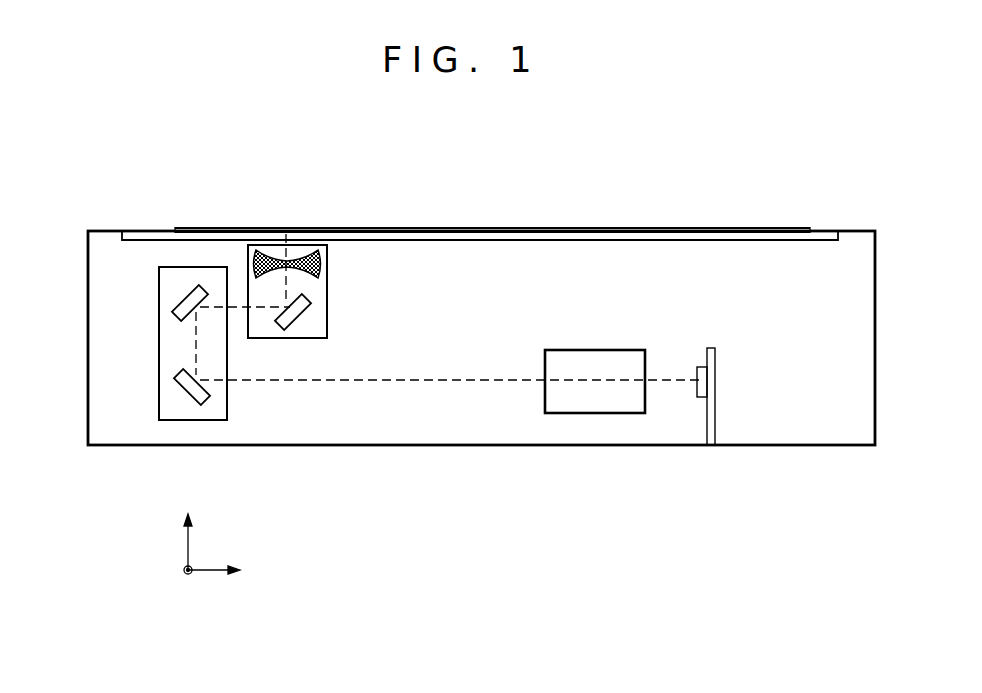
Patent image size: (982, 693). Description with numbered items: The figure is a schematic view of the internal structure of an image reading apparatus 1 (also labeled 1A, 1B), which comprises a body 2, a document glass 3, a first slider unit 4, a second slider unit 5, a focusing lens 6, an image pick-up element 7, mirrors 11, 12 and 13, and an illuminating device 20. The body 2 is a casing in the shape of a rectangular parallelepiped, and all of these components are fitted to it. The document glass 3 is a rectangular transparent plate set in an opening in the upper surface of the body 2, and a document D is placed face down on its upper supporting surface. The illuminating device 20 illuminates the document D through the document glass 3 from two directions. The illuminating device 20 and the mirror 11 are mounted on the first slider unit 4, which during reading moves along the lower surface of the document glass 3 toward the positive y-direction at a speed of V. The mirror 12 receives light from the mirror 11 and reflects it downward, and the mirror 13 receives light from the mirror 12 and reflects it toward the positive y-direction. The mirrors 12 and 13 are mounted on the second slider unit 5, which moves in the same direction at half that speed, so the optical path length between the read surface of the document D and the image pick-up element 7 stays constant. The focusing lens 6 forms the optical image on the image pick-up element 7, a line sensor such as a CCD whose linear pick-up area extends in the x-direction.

The image reading apparatus 1 is at (157, 155).
The light source device (variant) 1A is at (476, 367).
The light source device (variant) 1B is at (481, 367).
The body 2 is at (848, 437).
The document glass 3 is at (835, 242).
The document D is at (775, 231).
The first slider unit 4 is at (318, 325).
The second slider unit 5 is at (217, 412).
The focusing lens 6 is at (570, 360).
The image pick-up element 7 is at (706, 368).
The mirror 11 is at (296, 330).
The mirror 12 is at (180, 297).
The mirror 13 is at (182, 397).
The illuminating device 20 is at (273, 245).